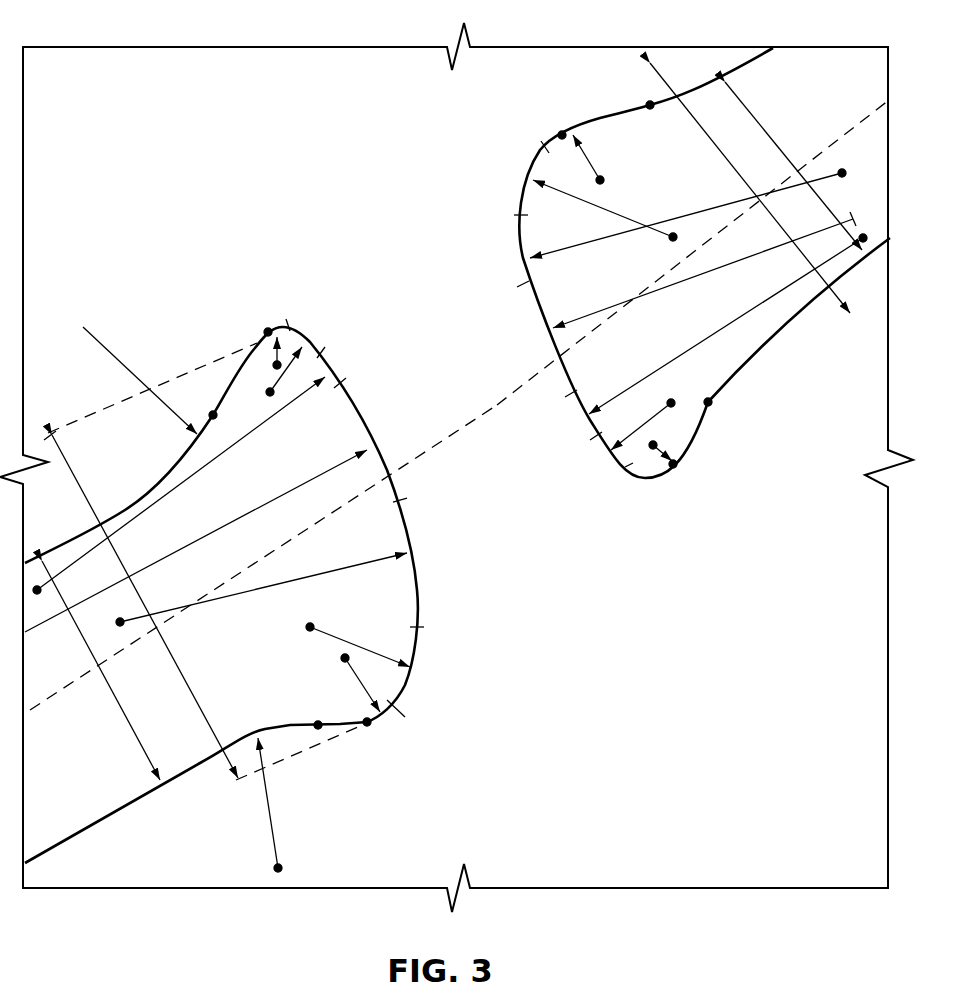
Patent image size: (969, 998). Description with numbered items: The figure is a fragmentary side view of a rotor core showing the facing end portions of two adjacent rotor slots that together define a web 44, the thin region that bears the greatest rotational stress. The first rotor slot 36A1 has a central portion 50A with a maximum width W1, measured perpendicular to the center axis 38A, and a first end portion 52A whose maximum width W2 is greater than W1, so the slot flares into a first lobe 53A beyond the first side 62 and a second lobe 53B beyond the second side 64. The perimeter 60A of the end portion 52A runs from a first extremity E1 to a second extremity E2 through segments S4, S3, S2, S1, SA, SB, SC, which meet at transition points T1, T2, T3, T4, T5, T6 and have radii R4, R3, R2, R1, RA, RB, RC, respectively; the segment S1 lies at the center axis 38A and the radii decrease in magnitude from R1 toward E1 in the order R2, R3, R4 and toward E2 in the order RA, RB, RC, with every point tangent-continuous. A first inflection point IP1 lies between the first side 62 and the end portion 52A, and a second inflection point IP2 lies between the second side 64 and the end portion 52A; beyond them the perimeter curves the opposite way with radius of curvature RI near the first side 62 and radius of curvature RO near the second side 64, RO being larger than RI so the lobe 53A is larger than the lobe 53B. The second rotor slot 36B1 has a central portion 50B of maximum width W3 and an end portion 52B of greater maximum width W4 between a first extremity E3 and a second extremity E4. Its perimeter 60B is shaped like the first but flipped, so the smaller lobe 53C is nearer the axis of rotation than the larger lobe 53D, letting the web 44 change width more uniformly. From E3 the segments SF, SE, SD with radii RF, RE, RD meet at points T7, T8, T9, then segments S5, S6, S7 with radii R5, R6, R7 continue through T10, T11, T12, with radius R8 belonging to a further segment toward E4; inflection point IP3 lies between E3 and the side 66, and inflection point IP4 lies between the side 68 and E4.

The central rotor slot 36A1 is at (185, 765).
The adjacent rotor slot 36B1 is at (743, 292).
The center axis 38A is at (490, 423).
The web 44 is at (477, 497).
The central portion 50A is at (130, 800).
The central portion 50B is at (825, 75).
The first end portion 52A is at (289, 724).
The end portion 52B is at (643, 362).
The first lobe 53A is at (390, 682).
The second lobe 53B is at (256, 360).
The smaller lobe 53C is at (690, 470).
The larger lobe 53D is at (553, 173).
The perimeter 60A is at (375, 425).
The perimeter 60B is at (530, 300).
The first side 62 is at (47, 850).
The second side 64 is at (62, 545).
The side 66 is at (841, 273).
The side 68 is at (738, 68).
The first extremity E1 is at (368, 727).
The second extremity E2 is at (276, 324).
The first extremity E3 is at (674, 473).
The second extremity E4 is at (563, 132).
The first inflection point IP1 is at (320, 730).
The second inflection point IP2 is at (213, 415).
The inflection point IP3 is at (711, 405).
The second inflection point IP4 is at (650, 103).
The radius R1 is at (261, 576).
The radius R2 is at (253, 588).
The radius R3 is at (355, 645).
The radius R4 is at (360, 683).
The radius R5 is at (647, 297).
The radius R6 is at (552, 260).
The radius R7 is at (607, 210).
The radius R8 is at (585, 152).
The radius RA is at (230, 447).
The radius RB is at (292, 368).
The radius RC is at (266, 333).
The radius RD is at (677, 350).
The radius RE is at (643, 423).
The radius RF is at (688, 446).
The radius of curvature RI is at (265, 835).
The radius of curvature RO is at (100, 343).
The segment S1 is at (378, 433).
The segment S2 is at (418, 590).
The segment S3 is at (407, 680).
The segment S4 is at (398, 722).
The segment S5 is at (548, 345).
The segment S6 is at (520, 267).
The segment S7 is at (520, 200).
The segment SA is at (340, 373).
The segment SB is at (289, 327).
The segment SC is at (274, 330).
The segment SD is at (592, 442).
The segment SE is at (617, 477).
The segment SF is at (650, 480).
The transition point T1 is at (411, 716).
The transition point T2 is at (436, 630).
The transition point T3 is at (416, 495).
The transition point T4 is at (342, 385).
The transition point T5 is at (325, 352).
The transition point T6 is at (300, 330).
The point T7 is at (640, 483).
The point T8 is at (590, 443).
The point T9 is at (573, 394).
The point T10 is at (520, 289).
The point T11 is at (518, 216).
The point T12 is at (547, 148).
The maximum width W1 is at (133, 728).
The maximum width W2 is at (175, 655).
The maximum width W3 is at (765, 130).
The maximum width W4 is at (728, 167).